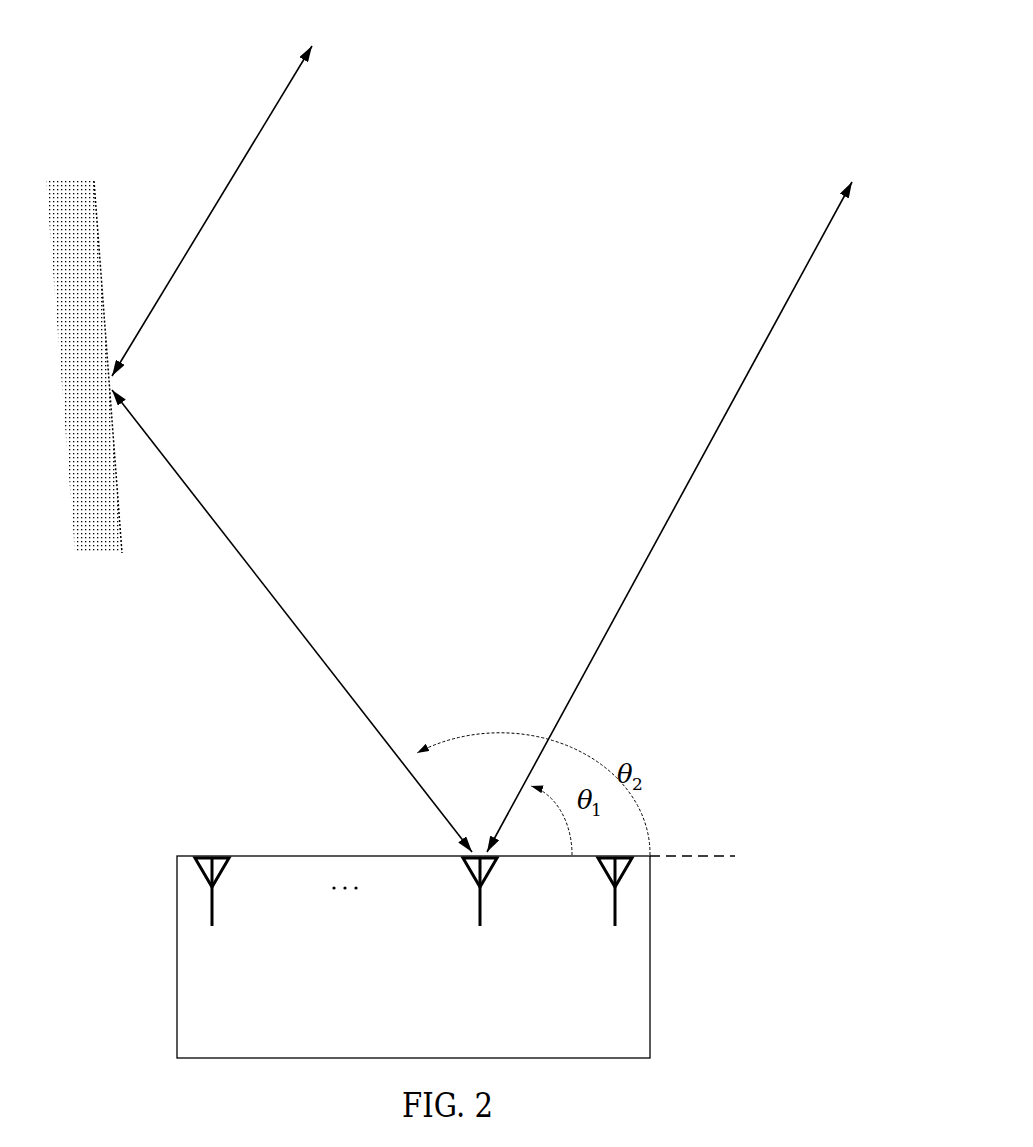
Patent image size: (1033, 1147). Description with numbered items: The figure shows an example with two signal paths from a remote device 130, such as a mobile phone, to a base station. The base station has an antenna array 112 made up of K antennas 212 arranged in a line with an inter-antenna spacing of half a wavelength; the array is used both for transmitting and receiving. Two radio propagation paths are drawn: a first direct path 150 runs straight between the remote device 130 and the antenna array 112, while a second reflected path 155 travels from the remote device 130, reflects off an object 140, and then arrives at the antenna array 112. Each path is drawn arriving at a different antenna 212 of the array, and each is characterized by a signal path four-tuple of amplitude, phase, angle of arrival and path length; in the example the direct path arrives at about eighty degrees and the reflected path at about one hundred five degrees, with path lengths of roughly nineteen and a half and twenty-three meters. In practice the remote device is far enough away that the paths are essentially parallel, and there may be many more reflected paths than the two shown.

The remote device 130 is at (615, 14).
The object 140 is at (118, 450).
The second reflected path 155 is at (298, 601).
The first direct path 150 is at (638, 636).
The antenna array 112 is at (652, 1002).
The antennas 212 is at (216, 888).